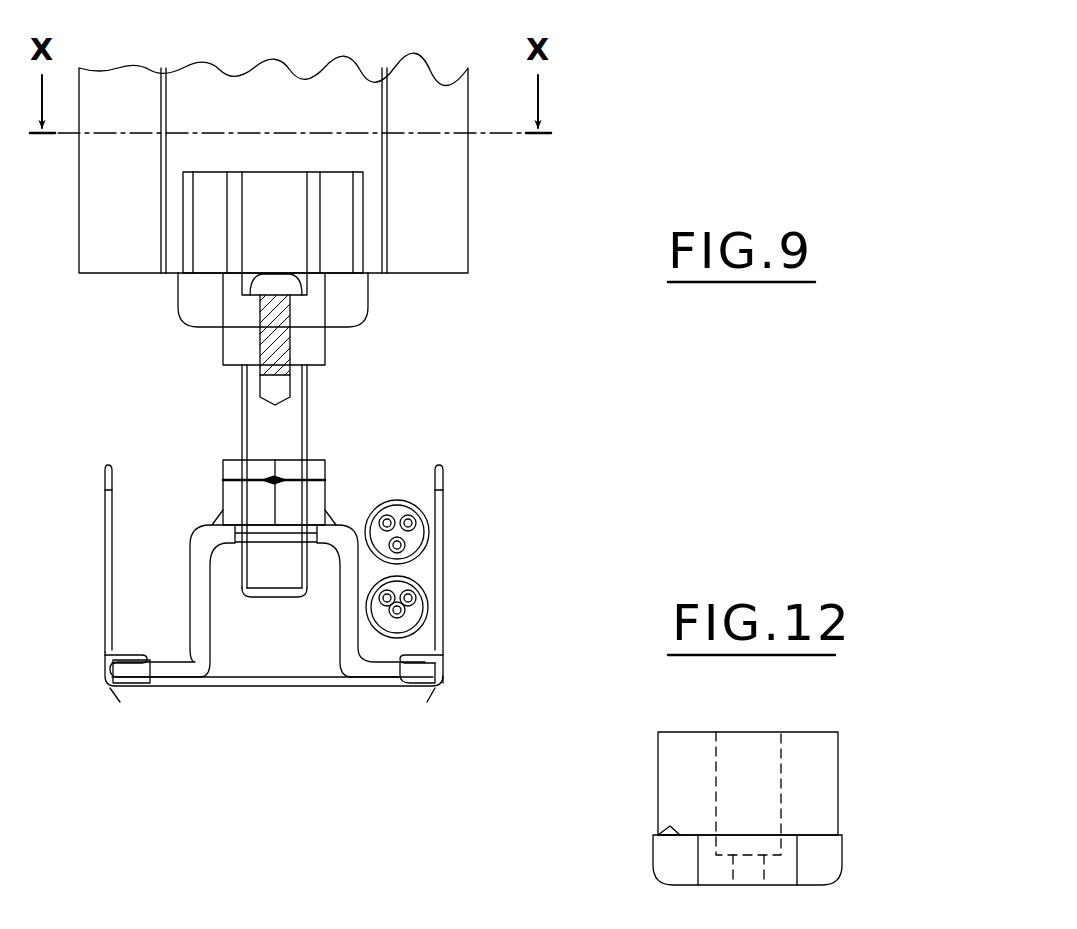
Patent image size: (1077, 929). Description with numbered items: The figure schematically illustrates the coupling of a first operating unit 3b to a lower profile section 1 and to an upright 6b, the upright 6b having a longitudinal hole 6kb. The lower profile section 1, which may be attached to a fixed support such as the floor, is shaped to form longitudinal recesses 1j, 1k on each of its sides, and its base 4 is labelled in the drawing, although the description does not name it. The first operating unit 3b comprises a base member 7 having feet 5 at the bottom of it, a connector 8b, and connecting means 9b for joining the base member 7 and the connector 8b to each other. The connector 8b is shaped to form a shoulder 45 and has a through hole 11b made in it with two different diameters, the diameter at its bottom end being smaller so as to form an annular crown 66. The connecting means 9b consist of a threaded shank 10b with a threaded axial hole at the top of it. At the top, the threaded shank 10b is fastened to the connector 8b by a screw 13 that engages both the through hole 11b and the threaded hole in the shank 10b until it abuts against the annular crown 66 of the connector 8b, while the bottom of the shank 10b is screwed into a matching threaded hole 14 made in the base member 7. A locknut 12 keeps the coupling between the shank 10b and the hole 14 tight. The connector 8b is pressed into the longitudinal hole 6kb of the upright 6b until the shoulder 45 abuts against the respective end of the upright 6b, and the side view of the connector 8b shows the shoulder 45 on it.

In FIG. 9, the longitudinal hole 6kb is at (272, 96).
In FIG. 9, the upright 6b is at (95, 228).
In FIG. 9, the through hole 11b is at (300, 223).
In FIG. 9, the connector 8b is at (380, 294).
In FIG. 12, the connector 8b is at (849, 768).
In FIG. 9, the annular crown 66 is at (302, 297).
In FIG. 9, the screw 13 is at (262, 310).
In FIG. 9, the threaded shank 10b is at (260, 415).
In FIG. 9, the connecting means 9b is at (178, 433).
In FIG. 9, the first operating unit 3b is at (414, 413).
In FIG. 9, the locknut 12 is at (317, 470).
In FIG. 9, the threaded hole 14 is at (233, 492).
In FIG. 9, the base member 7 is at (198, 593).
In FIG. 9, the lower profile section 1 is at (456, 615).
In FIG. 9, the base plate 4 is at (289, 697).
In FIG. 9, the feet 5 is at (162, 672).
In FIG. 9, the longitudinal recess 1j is at (101, 692).
In FIG. 9, the longitudinal recess 1k is at (447, 698).
In FIG. 12, the shoulder 45 is at (678, 831).